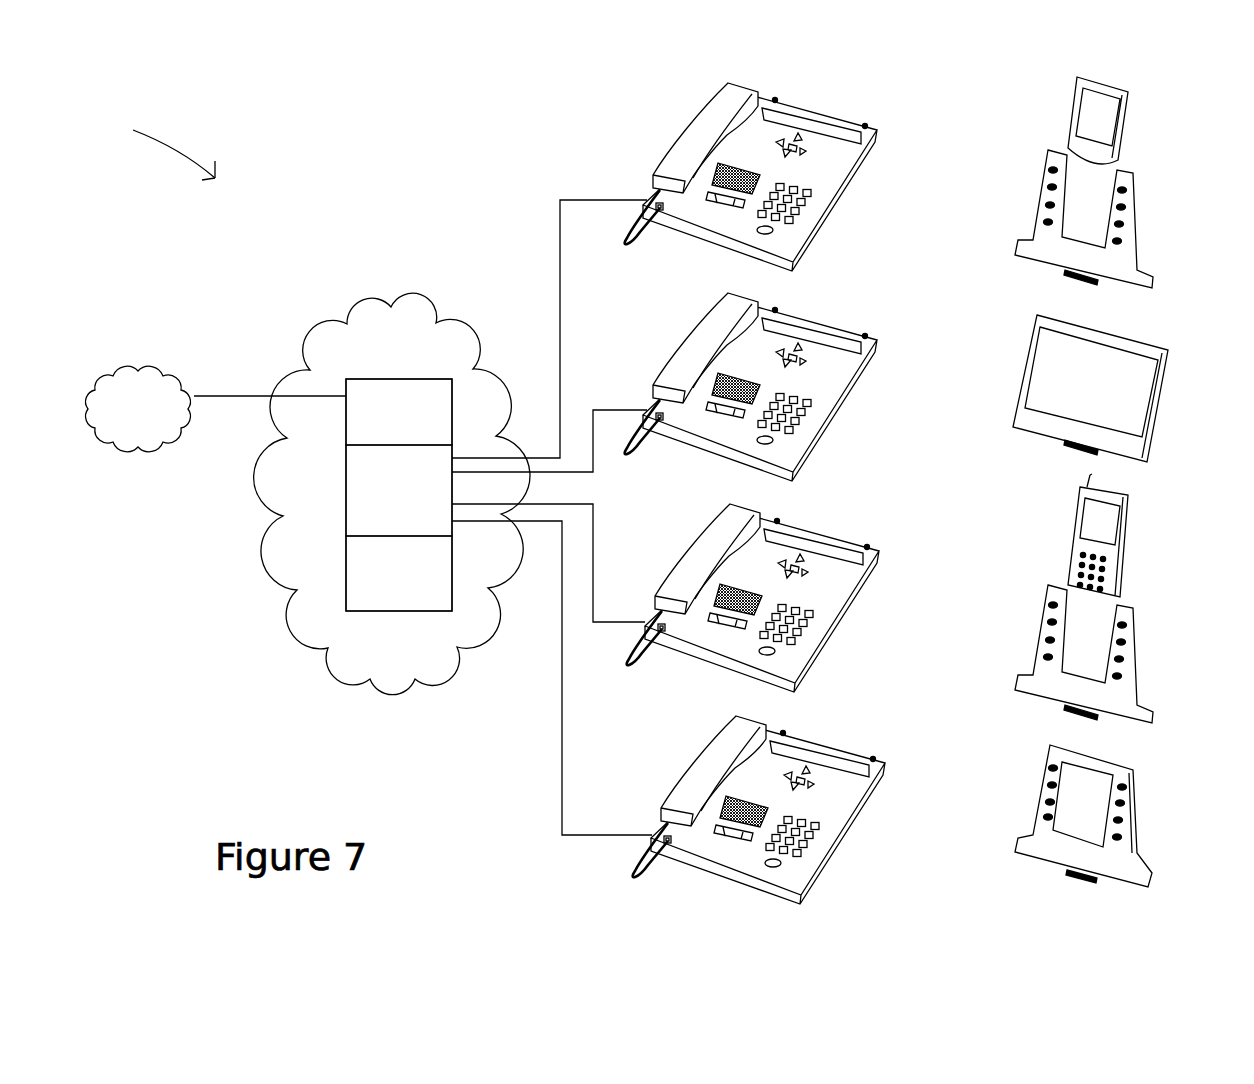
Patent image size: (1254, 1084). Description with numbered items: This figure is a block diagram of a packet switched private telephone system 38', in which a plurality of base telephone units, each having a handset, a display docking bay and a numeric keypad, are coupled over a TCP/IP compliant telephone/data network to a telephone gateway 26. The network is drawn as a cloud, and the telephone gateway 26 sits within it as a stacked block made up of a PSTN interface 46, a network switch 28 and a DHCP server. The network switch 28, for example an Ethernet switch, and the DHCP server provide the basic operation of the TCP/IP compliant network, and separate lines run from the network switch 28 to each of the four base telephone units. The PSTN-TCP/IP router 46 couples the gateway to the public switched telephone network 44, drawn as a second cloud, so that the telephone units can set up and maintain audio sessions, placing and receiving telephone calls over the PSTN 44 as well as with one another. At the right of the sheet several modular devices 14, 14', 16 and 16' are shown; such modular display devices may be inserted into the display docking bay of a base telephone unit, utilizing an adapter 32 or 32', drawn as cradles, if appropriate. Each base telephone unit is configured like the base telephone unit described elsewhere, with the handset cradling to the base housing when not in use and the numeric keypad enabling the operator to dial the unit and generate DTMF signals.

The base unit with display 14 is at (1106, 816).
The display unit 14' is at (1124, 388).
The portable handset 16 is at (1130, 120).
The cellular handset 16' is at (1131, 535).
The telephone gateway 26 is at (400, 379).
The network switch 28 is at (346, 482).
The adapter 32 is at (747, 380).
The handset cradle 32' is at (1105, 654).
The private telephone system 38' is at (157, 146).
The public switched telephone network (PSTN) 44 is at (146, 368).
The PSTN-TCP/IP router 46 is at (346, 409).